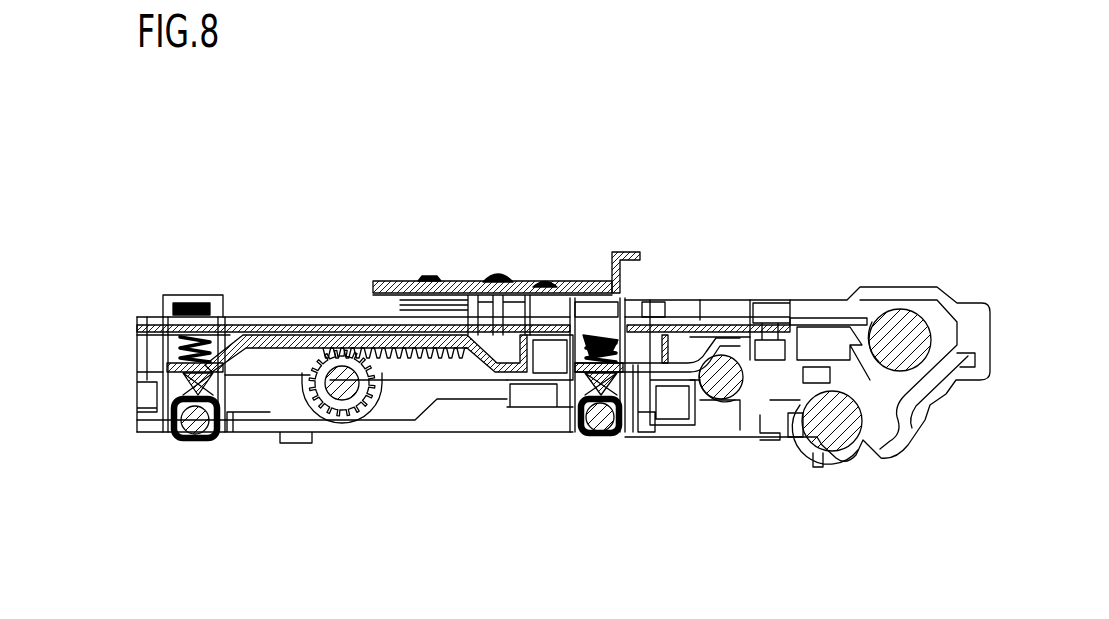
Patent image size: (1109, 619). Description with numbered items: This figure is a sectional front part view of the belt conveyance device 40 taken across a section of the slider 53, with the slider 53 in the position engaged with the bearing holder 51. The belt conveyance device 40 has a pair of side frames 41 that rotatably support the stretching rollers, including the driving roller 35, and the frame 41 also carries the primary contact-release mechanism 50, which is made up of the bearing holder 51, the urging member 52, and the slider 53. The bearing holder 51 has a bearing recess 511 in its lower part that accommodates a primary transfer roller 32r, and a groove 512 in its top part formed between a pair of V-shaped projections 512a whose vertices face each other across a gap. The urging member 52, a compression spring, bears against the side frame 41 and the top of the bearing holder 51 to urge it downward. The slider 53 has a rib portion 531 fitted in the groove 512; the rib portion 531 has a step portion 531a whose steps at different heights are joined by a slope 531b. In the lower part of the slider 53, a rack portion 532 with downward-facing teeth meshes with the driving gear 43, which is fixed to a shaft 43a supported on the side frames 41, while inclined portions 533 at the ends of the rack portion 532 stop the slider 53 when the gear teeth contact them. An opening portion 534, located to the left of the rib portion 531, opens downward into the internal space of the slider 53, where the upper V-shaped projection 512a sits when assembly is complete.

The belt conveyance device 40 is at (388, 171).
The side frame 41 is at (816, 300).
The driving roller 35 is at (905, 310).
The primary contact-release mechanism 50 is at (696, 410).
The slider 53 is at (373, 283).
The rack portion 532 is at (428, 277).
The inclined portion 533 is at (490, 278).
The urging member 52 is at (195, 335).
The bearing holder 51 is at (233, 377).
The bearing recess 511 is at (172, 415).
The groove 512 is at (240, 410).
The V-shaped projection 512a is at (175, 303).
The primary transfer roller 32r is at (197, 442).
The opening portion 534 is at (148, 425).
The rib portion 531 is at (209, 358).
The step portion 531a is at (254, 331).
The slope 531b is at (228, 340).
The driving gear 43 is at (430, 357).
The shaft 43a is at (344, 392).